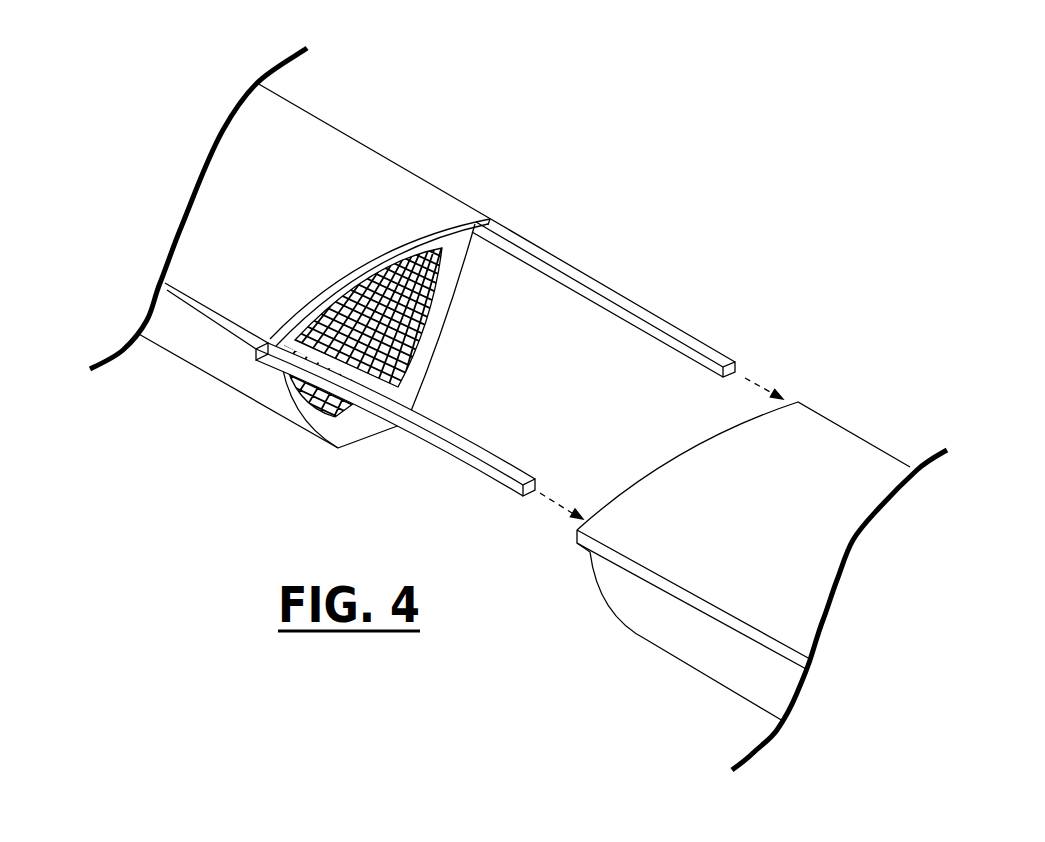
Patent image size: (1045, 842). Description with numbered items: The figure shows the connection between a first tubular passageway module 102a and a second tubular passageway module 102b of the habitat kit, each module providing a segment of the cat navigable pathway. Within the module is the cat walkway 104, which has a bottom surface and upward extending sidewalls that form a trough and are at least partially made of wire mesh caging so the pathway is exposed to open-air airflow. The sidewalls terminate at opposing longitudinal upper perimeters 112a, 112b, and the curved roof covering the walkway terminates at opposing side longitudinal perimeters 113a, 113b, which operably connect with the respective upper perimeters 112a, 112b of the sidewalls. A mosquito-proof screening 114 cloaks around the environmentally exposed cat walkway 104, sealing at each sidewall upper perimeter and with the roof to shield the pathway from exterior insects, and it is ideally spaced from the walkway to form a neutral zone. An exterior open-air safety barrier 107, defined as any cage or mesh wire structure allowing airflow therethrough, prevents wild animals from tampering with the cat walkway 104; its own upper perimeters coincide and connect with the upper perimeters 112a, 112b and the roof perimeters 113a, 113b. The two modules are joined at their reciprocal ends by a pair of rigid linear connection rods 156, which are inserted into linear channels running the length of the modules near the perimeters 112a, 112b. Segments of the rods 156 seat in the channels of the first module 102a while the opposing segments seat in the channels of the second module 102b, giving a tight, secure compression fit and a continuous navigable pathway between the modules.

The first tubular passageway module 102a is at (350, 112).
The second tubular passageway module 102b is at (853, 383).
The cat walkway 104 is at (441, 281).
The exterior open-air safety barrier 107 is at (456, 334).
The mosquito-proof screening 114 is at (363, 332).
The longitudinal upper perimeter 112a is at (227, 321).
The longitudinal upper perimeter 112b is at (429, 180).
The side longitudinal perimeter 113a is at (190, 297).
The side longitudinal perimeter 113b is at (377, 150).
The rigid linear connection rod 156 is at (598, 282).